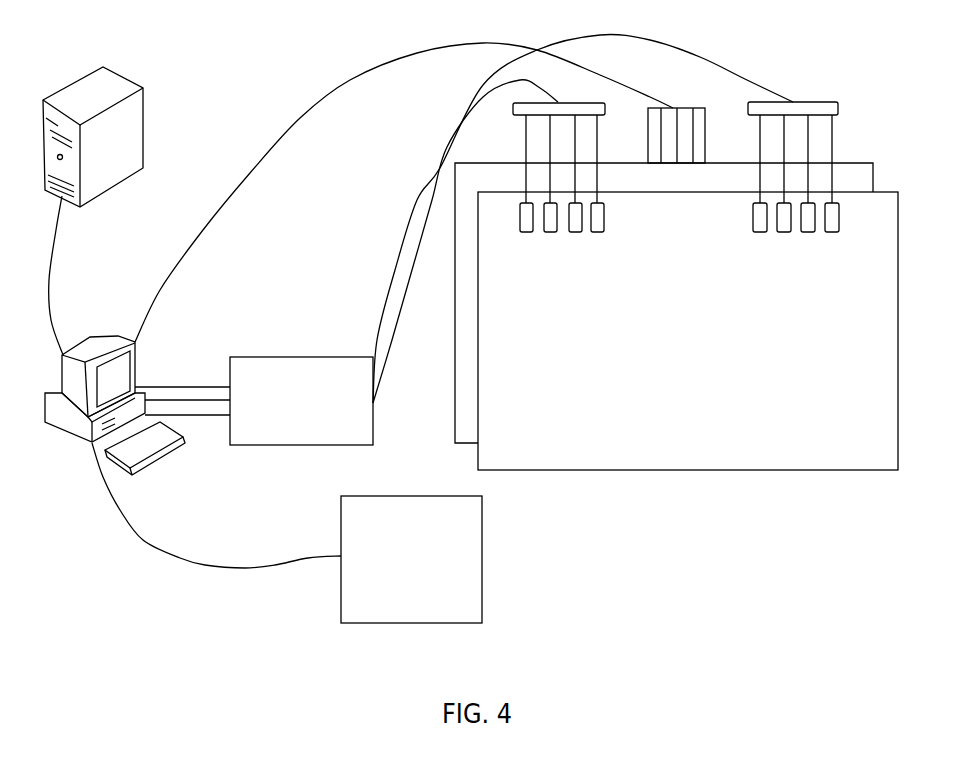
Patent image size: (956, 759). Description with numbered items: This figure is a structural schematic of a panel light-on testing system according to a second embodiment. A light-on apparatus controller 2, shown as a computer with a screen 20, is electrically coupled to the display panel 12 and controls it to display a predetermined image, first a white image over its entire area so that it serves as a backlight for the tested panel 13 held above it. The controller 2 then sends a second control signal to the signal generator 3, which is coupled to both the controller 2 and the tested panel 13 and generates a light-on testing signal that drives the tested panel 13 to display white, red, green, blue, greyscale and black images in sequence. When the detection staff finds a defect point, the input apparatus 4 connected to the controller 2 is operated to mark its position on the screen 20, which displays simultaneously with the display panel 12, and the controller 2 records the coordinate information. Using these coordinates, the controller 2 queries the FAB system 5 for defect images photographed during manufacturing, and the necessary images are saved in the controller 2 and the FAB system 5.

The light-on apparatus controller 2 is at (75, 443).
The screen 20 is at (138, 360).
The FAB system 5 is at (145, 128).
The signal generator 3 is at (301, 401).
The input apparatus 4 is at (411, 559).
The display panel 12 is at (853, 173).
The tested panel 13 is at (630, 462).